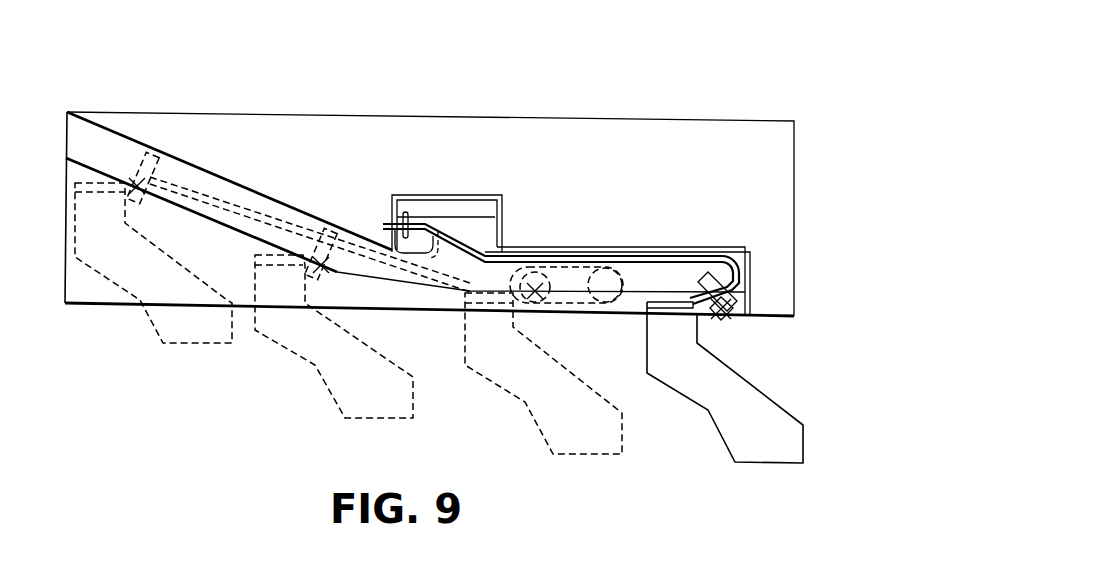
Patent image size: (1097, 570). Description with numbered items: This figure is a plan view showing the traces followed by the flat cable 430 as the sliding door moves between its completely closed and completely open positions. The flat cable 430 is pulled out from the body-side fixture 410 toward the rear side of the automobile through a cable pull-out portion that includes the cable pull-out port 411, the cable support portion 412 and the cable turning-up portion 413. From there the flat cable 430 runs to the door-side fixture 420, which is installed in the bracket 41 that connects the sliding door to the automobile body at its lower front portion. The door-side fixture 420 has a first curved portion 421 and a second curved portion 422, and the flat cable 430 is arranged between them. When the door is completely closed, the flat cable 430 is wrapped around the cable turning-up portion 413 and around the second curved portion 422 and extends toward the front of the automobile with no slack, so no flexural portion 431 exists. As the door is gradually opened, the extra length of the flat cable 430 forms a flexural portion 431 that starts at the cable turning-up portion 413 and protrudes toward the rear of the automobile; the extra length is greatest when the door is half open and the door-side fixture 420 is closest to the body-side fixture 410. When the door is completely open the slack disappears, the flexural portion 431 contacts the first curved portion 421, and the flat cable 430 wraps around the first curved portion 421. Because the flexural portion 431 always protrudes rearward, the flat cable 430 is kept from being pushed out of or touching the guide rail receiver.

The bracket 41 is at (742, 440).
The body-side fixture 410 is at (485, 187).
The cable pull-out port 411 is at (413, 224).
The cable support portion 412 is at (490, 214).
The cable turning-up portion 413 is at (430, 225).
The door-side fixture 420 is at (735, 256).
The first curved portion 421 is at (742, 292).
The second curved portion 422 is at (740, 310).
The flat cable 430 is at (230, 200).
The flexural portion 431 is at (633, 262).